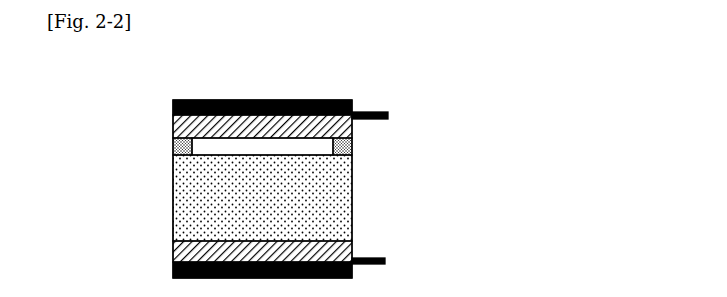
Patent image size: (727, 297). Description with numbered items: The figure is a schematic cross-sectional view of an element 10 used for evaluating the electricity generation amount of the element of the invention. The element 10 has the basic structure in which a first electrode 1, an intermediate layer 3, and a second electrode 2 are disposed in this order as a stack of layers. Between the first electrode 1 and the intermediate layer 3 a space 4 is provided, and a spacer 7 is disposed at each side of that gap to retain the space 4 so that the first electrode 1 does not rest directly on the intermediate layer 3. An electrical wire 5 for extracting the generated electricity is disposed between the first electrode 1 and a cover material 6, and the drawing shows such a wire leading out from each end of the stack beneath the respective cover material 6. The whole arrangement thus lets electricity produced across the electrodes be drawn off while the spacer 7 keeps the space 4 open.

The element 10 is at (103, 80).
The first electrode 1 is at (355, 125).
The second electrode 2 is at (355, 248).
The intermediate layer 3 is at (180, 204).
The space 4 is at (303, 149).
The electrical wire 5 is at (378, 110).
The cover material 6 is at (173, 103).
The spacer 7 is at (176, 146).